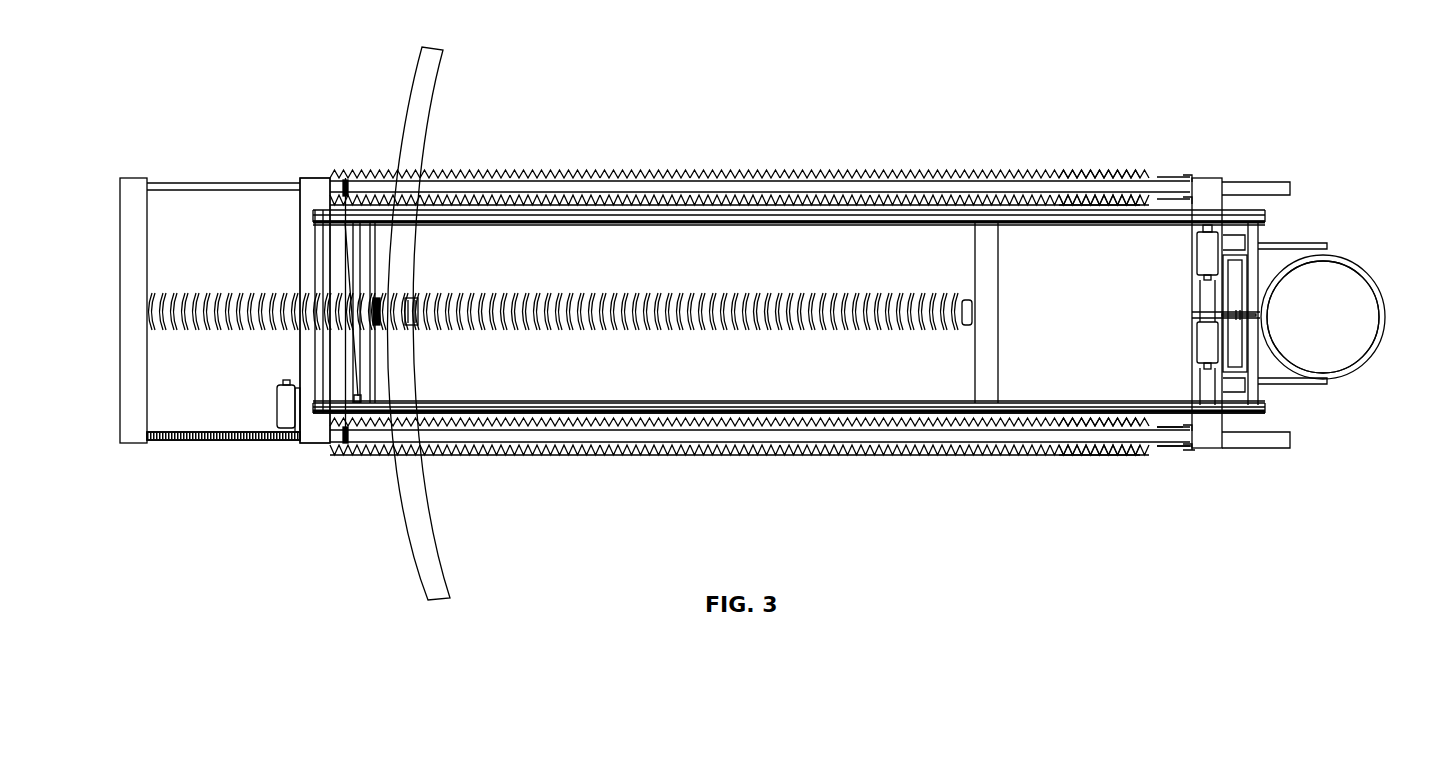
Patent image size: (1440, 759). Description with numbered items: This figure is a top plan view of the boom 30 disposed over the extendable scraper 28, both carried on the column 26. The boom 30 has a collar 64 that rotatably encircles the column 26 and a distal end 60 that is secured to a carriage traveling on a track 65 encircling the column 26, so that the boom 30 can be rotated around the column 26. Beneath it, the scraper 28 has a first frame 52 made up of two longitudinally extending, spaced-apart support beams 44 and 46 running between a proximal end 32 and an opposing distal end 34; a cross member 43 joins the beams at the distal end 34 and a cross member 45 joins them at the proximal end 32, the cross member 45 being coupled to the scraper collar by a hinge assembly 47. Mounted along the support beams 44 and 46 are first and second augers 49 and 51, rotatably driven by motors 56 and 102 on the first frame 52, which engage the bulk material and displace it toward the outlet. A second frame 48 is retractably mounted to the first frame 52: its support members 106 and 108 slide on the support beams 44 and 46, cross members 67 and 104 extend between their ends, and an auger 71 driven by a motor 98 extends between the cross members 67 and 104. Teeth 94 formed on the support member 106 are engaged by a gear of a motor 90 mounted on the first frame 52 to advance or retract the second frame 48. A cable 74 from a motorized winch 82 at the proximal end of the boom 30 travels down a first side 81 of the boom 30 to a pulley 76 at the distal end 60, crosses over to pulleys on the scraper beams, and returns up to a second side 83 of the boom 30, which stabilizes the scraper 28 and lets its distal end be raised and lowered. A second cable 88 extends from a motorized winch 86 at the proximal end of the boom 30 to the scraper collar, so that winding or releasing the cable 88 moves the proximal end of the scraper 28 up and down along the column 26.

The column 26 is at (1347, 343).
The scraper 28 is at (213, 163).
The boom 30 is at (865, 405).
The proximal end 32 is at (1165, 440).
The distal end 34 is at (362, 187).
The cross member 43 is at (308, 205).
The support beam 44 is at (658, 440).
The cross member 45 is at (1203, 430).
The support beam 46 is at (656, 166).
The hinge assembly 47 is at (1232, 262).
The second frame 48 is at (205, 441).
The first auger 49 is at (960, 454).
The second auger 51 is at (945, 173).
The first frame 52 is at (867, 190).
The motor 56 is at (1200, 450).
The distal end 60 is at (261, 549).
The collar 64 is at (1346, 262).
The track 65 is at (437, 607).
The cross member 67 is at (128, 393).
The auger 71 is at (673, 332).
The cable 74 is at (345, 278).
The pulley 76 is at (362, 224).
The first side 81 is at (797, 218).
The motorized winch 82 is at (1205, 248).
The second side 83 is at (770, 405).
The motorized winch 86 is at (1205, 340).
The cable 88 is at (1232, 316).
The motor 90 is at (285, 418).
The teeth 94 is at (260, 442).
The motor 98 is at (970, 327).
The motor 102 is at (1201, 178).
The cross member 104 is at (990, 370).
The support member 106 is at (178, 442).
The support member 108 is at (188, 190).